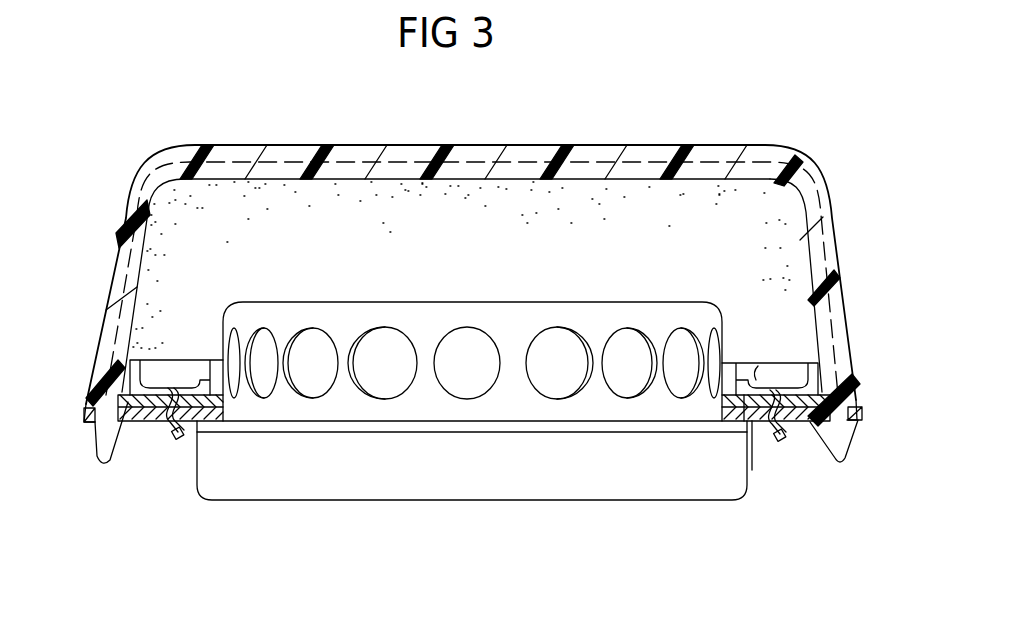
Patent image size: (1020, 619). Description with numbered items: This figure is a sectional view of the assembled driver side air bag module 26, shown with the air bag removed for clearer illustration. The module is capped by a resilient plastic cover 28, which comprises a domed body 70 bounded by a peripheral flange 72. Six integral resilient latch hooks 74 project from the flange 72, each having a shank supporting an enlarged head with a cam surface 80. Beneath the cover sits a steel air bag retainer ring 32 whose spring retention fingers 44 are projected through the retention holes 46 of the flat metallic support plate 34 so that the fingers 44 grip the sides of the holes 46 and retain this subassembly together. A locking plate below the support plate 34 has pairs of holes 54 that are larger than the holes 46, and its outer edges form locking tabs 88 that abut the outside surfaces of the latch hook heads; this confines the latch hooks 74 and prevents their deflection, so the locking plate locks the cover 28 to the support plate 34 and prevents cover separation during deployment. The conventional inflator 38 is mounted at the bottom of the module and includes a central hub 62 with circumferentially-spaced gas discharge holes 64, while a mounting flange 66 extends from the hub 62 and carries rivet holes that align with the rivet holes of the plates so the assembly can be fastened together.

The driver side air bag module 26 is at (718, 118).
The cover 28 is at (262, 146).
The domed body 70 is at (825, 192).
The peripheral flange 72 is at (82, 396).
The locking tabs 88 is at (83, 413).
The latch hooks 74 is at (95, 464).
The cam surface 80 is at (110, 466).
The air bag retainer ring 32 is at (178, 332).
The spring retention fingers 44 is at (170, 432).
The retention holes 46 is at (767, 402).
The holes 54 is at (748, 420).
The support plate 34 is at (732, 412).
The inflator 38 is at (195, 516).
The central hub 62 is at (697, 302).
The gas discharge holes 64 is at (625, 345).
The mounting flange 66 is at (440, 432).